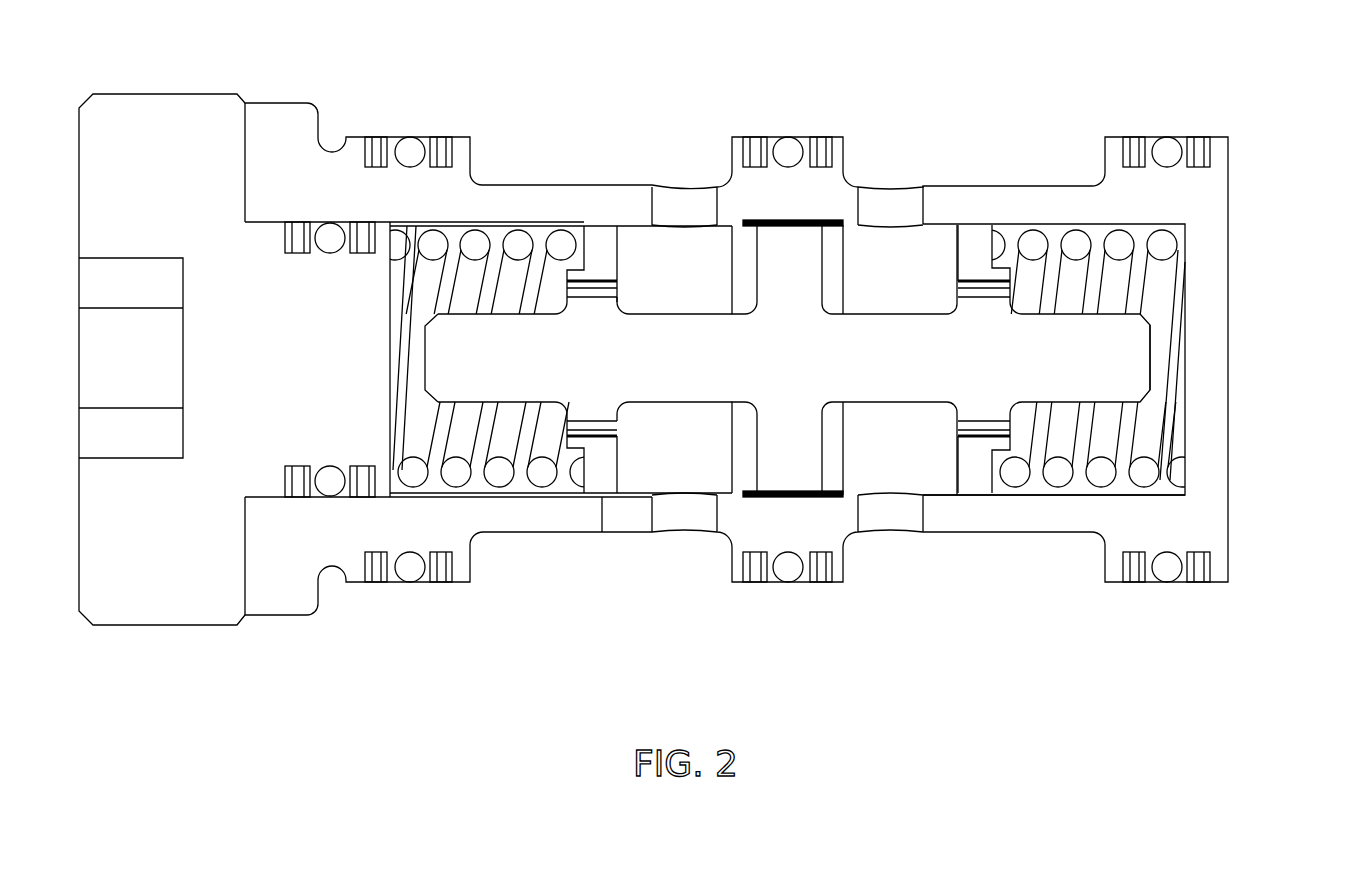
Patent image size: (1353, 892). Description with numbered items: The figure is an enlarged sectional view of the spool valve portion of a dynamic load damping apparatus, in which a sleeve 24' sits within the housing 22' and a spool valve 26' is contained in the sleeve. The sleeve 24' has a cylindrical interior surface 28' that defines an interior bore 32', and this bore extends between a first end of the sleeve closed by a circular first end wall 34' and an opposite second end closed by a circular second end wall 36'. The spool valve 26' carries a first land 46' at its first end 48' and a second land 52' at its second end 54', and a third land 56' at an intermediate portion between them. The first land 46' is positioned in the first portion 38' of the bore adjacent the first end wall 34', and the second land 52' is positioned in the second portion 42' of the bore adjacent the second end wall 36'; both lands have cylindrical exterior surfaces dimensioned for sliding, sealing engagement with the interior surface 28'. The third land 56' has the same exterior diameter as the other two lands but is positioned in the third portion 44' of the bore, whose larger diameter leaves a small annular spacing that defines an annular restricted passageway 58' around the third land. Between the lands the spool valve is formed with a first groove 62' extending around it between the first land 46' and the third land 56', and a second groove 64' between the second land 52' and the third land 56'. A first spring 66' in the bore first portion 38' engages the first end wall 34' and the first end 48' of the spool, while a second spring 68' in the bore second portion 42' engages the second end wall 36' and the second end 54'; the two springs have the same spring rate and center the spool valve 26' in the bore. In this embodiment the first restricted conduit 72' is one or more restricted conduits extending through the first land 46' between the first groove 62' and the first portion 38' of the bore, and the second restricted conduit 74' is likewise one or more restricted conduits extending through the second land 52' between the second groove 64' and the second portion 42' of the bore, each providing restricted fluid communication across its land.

The housing 22' is at (700, 359).
The sleeve 24' is at (700, 359).
The spool valve 26' is at (811, 360).
The interior surface 28' is at (488, 257).
The interior bore 32' is at (448, 558).
The first end wall 34' is at (361, 359).
The second end wall 36' is at (1220, 365).
The first portion 38' is at (561, 558).
The second portion 42' is at (1054, 557).
The third portion 44' is at (753, 424).
The first land 46' is at (572, 536).
The first end 48' is at (387, 358).
The second land 52' is at (799, 505).
The second end 54' is at (1218, 354).
The third land 56' is at (822, 533).
The annular restricted passageway 58' is at (838, 260).
The first groove 62' is at (730, 230).
The second groove 64' is at (895, 320).
The first spring 66' is at (468, 356).
The second spring 68' is at (1102, 367).
The first restricted conduit 72' is at (579, 319).
The second restricted conduit 74' is at (1003, 320).